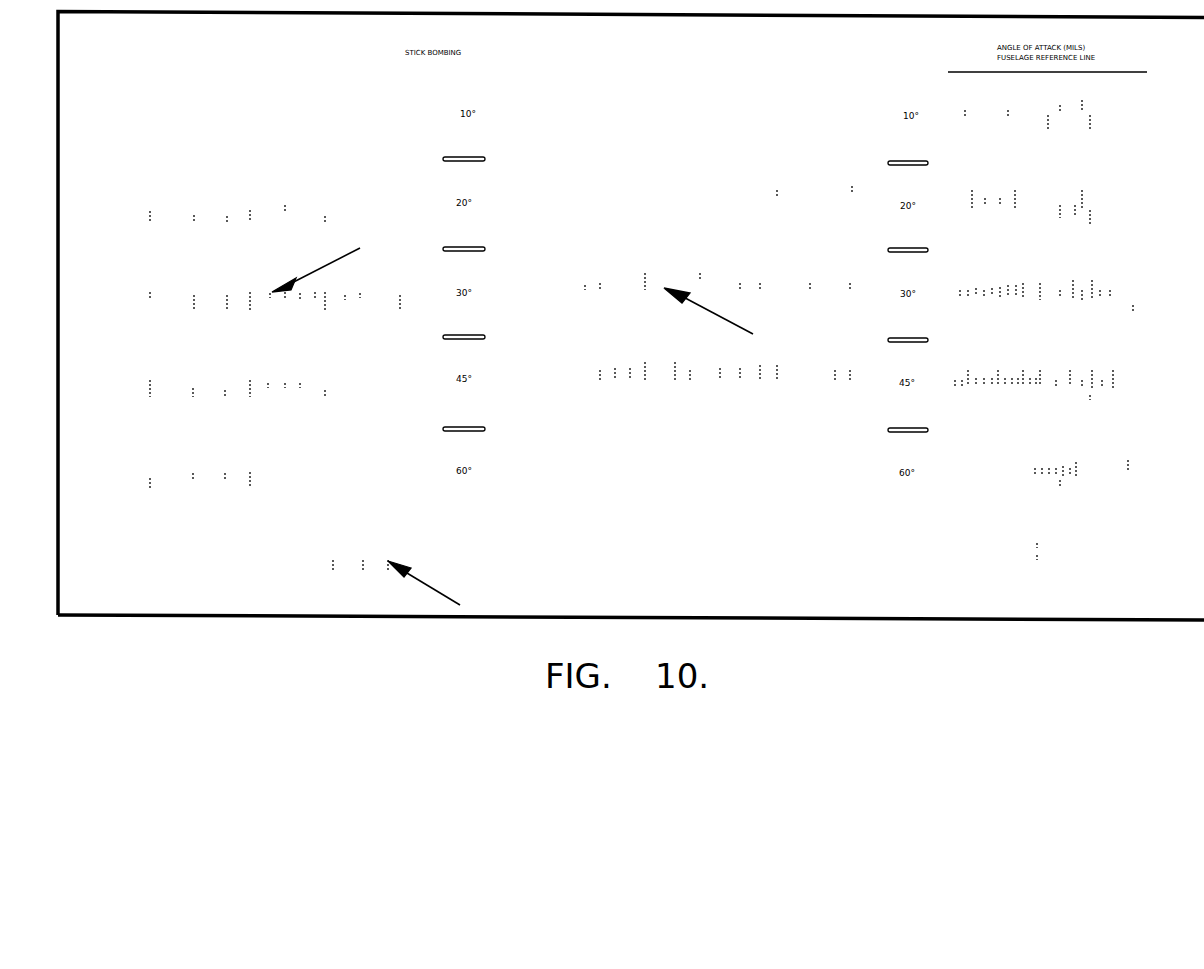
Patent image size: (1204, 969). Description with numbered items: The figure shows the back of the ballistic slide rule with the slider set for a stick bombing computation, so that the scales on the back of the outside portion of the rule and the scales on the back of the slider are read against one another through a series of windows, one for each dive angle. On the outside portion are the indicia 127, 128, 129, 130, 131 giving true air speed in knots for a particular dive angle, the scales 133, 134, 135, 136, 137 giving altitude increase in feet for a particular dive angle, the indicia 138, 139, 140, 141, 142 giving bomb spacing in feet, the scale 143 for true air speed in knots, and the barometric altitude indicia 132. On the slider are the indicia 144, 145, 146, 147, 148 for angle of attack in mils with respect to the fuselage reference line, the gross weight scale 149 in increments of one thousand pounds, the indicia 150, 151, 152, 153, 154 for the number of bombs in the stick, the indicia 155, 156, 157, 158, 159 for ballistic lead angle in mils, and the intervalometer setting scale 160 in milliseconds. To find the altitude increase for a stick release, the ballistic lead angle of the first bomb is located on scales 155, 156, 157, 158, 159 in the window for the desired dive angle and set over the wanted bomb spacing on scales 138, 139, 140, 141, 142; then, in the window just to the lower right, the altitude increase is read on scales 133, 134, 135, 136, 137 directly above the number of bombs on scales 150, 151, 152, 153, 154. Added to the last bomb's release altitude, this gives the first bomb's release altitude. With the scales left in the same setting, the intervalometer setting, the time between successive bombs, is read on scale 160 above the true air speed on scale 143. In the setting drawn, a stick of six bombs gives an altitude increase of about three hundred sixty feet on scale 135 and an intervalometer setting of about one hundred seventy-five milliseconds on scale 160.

The dive angle versus true air speed indicia 127 is at (945, 147).
The dive angle versus true air speed indicia 128 is at (945, 237).
The dive angle versus true air speed indicia 129 is at (945, 329).
The dive angle versus true air speed indicia 130 is at (947, 417).
The dive angle versus true air speed indicia 131 is at (1190, 502).
The barometric altitude scale 132 is at (960, 589).
The altitude increase scale 133 is at (510, 98).
The altitude increase scale 134 is at (510, 189).
The altitude increase scale 135 is at (510, 279).
The altitude increase scale 136 is at (510, 369).
The altitude increase scale 137 is at (510, 461).
The bomb spacing indicia 138 is at (128, 141).
The bomb spacing indicia 139 is at (128, 234).
The bomb spacing indicia 140 is at (132, 321).
The bomb spacing indicia 141 is at (128, 402).
The bomb spacing indicia 142 is at (130, 506).
The true air speed scale 143 is at (295, 599).
The angle of attack indicia 144 is at (1153, 104).
The angle of attack indicia 145 is at (1153, 194).
The angle of attack indicia 146 is at (1153, 282).
The angle of attack indicia 147 is at (1175, 374).
The angle of attack indicia 148 is at (947, 464).
The gross weight scale 149 is at (1113, 552).
The number of bombs indicia 150 is at (700, 151).
The number of bombs indicia 151 is at (768, 237).
The number of bombs indicia 152 is at (812, 327).
The number of bombs indicia 153 is at (510, 414).
The number of bombs indicia 154 is at (537, 509).
The ballistic lead angle indicia 155 is at (234, 102).
The ballistic lead angle indicia 156 is at (190, 196).
The ballistic lead angle indicia 157 is at (160, 284).
The ballistic lead angle indicia 158 is at (327, 367).
The ballistic lead angle indicia 159 is at (305, 459).
The intervalometer setting scale 160 is at (207, 554).